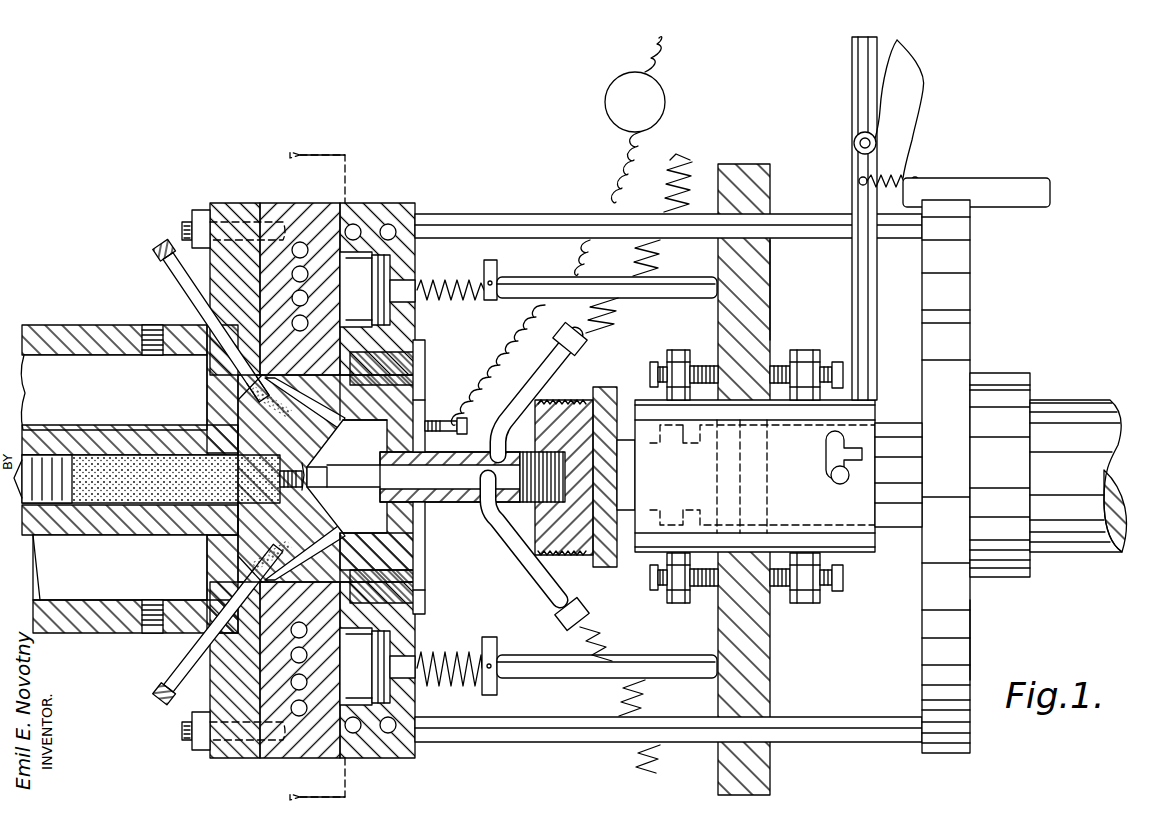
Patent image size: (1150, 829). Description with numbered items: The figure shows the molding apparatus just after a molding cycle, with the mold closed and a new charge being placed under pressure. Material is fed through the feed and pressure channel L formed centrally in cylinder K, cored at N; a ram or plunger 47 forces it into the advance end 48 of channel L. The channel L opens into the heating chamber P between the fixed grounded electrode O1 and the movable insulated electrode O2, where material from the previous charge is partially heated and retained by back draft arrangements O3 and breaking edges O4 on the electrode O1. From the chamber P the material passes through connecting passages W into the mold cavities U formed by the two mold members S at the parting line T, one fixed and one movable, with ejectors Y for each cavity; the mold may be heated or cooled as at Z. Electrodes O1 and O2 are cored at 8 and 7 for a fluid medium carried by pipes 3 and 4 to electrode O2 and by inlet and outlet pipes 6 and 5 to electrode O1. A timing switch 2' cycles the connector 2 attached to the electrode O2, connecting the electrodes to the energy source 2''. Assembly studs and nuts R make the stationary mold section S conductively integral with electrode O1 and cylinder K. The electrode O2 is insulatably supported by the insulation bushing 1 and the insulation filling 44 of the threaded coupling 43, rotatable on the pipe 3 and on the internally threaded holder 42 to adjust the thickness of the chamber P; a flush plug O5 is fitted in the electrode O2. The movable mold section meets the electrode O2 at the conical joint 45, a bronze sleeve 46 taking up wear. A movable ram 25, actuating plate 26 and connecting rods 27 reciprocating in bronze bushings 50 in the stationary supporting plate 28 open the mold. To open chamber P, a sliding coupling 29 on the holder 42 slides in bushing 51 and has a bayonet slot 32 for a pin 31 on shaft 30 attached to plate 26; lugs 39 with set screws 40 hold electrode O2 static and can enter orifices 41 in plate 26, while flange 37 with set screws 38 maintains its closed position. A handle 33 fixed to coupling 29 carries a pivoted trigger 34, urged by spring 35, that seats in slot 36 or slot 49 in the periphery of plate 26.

The insulation bushing 1 is at (430, 590).
The connector 2 is at (367, 478).
The timing switch 2' is at (620, 174).
The electrostatic high frequency generator 2'' is at (617, 54).
The pipe 3 is at (512, 372).
The pipe 4 is at (480, 485).
The outlet pipe 5 is at (180, 278).
The inlet pipe 6 is at (185, 660).
The coring of insulated electrode 7 is at (478, 505).
The coring of grounded electrode 8 is at (270, 548).
The movable ram 25 is at (1062, 402).
The actuating plate 26 is at (972, 630).
The connecting rods 27 is at (906, 238).
The stationary supporting plate 28 is at (772, 305).
The sliding coupling 29 is at (878, 545).
The shaft 30 is at (905, 532).
The pin 31 is at (840, 484).
The bayonet slot 32 is at (852, 445).
The handle 33 is at (852, 58).
The pivoted trigger 34 is at (920, 95).
The spring 35 is at (898, 178).
The slot 36 is at (965, 204).
The flange 37 is at (800, 352).
The set screws 38 is at (838, 592).
The lugs 39 is at (675, 350).
The set screws 40 is at (650, 370).
The slots or orifices 41 is at (725, 515).
The internally threaded holder 42 is at (600, 392).
The threaded coupling 43 is at (545, 410).
The insulation filling 44 is at (552, 560).
The straight conical joint 45 is at (430, 572).
The bronze sleeve 46 is at (416, 378).
The ram or plunger 47 is at (50, 470).
The advance end of pressure channel 48 is at (235, 440).
The slot 49 is at (972, 314).
The bronze bushings 50 is at (760, 205).
The bronze bushing 51 is at (740, 565).
The cylinder K is at (125, 628).
The material feed and pressure channel L is at (240, 552).
The coring N is at (130, 575).
The grounded electrode O1 is at (240, 418).
The insulated electrode O2 is at (320, 456).
The back draft arrangements O3 is at (340, 400).
The breaking edges O4 is at (417, 400).
The flush plug O5 is at (316, 470).
The heating chamber P is at (318, 425).
The assembly studs and nuts R is at (182, 232).
The mold members S is at (300, 214).
The parting line T is at (396, 212).
The mold cavities U is at (382, 262).
The connecting passages W is at (418, 342).
The ejectors Y is at (505, 278).
The mold heating or cooling coring Z is at (290, 708).